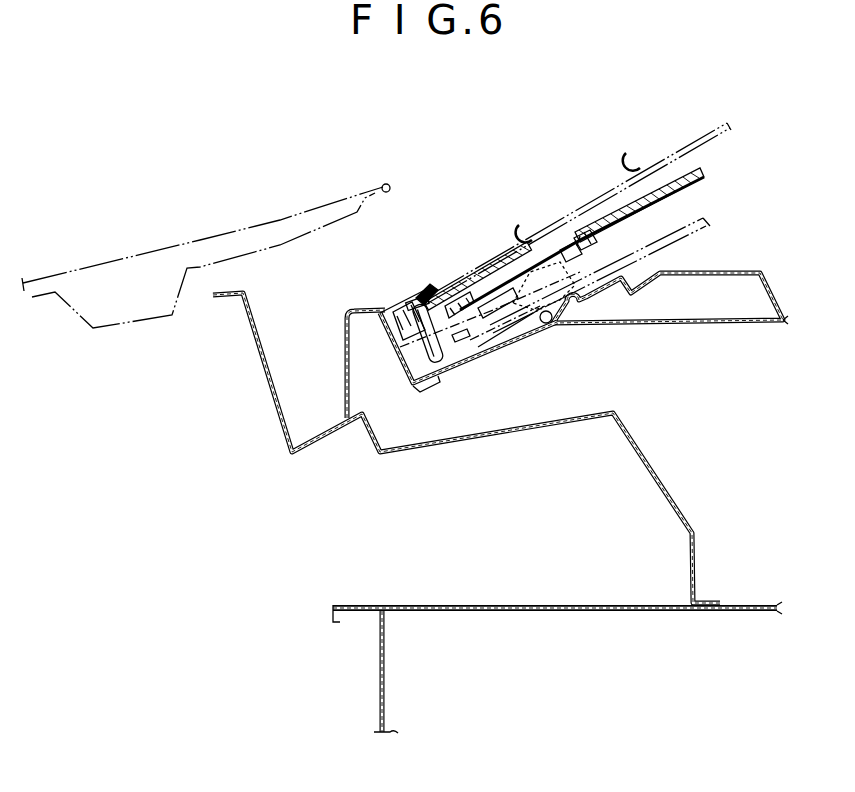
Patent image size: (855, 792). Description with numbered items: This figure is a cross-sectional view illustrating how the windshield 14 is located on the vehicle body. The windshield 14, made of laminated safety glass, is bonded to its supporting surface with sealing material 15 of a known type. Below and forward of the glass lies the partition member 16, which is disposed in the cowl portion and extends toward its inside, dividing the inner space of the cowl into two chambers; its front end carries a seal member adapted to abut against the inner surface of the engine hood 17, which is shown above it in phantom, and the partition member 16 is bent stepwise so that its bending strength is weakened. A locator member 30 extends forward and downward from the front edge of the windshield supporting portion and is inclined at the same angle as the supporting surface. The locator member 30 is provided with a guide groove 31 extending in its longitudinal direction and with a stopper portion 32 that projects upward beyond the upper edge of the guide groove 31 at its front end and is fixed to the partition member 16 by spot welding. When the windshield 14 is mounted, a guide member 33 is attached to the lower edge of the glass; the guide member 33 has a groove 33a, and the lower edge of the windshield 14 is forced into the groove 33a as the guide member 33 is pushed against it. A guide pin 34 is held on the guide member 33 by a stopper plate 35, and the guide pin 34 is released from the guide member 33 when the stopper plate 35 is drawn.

The windshield 14 is at (674, 152).
The sealing material 15 is at (598, 240).
The partition member 16 is at (527, 458).
The engine hood 17 is at (328, 205).
The locator member 30 is at (527, 344).
The guide groove 31 is at (555, 325).
The stopper portion 32 is at (346, 326).
The guide member 33 is at (388, 300).
The groove 33a is at (472, 350).
The guide pin 34 is at (420, 382).
The stopper plate 35 is at (472, 268).